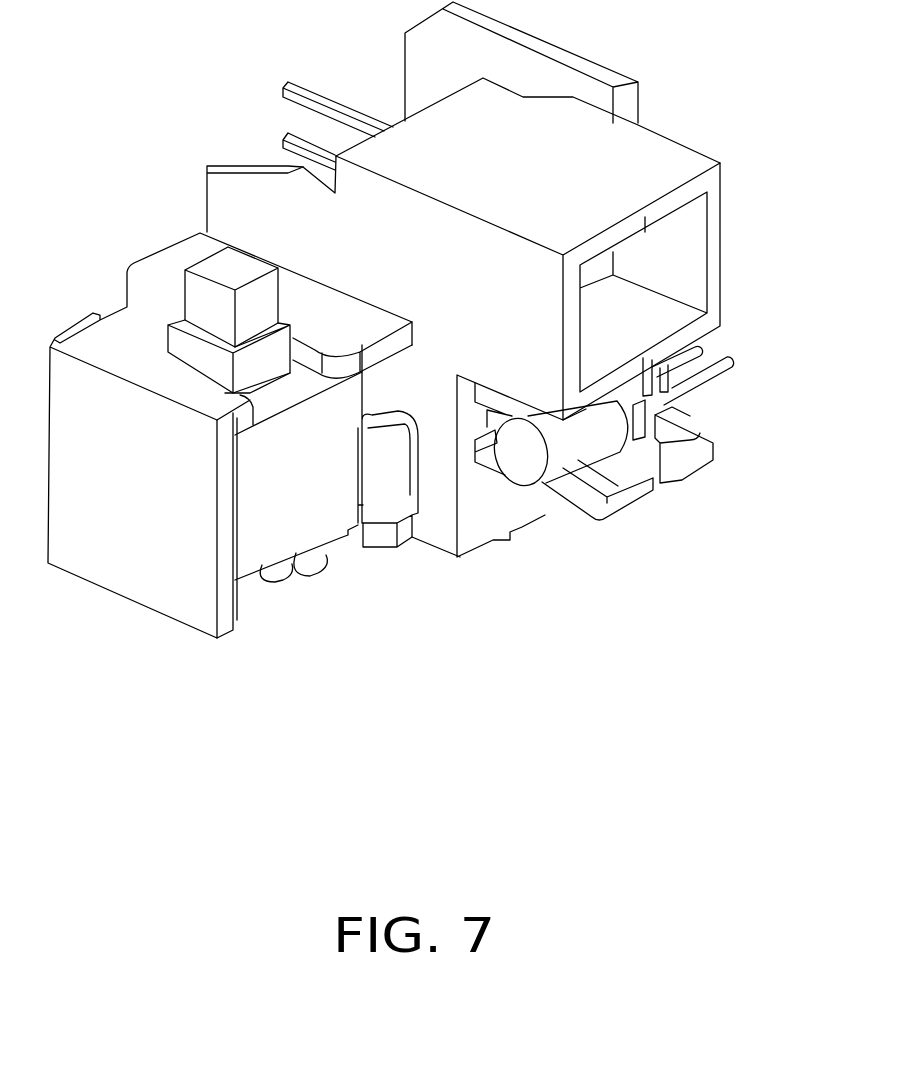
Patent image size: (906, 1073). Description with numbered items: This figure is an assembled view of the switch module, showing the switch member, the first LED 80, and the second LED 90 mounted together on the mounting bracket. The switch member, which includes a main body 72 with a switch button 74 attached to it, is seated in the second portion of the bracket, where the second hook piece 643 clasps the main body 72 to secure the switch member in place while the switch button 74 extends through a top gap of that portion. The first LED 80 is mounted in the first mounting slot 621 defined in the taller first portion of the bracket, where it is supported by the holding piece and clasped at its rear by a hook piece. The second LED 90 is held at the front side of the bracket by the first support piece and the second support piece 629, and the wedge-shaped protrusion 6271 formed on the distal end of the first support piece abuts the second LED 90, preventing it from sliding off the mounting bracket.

The first LED 80 is at (307, 90).
The switch button 74 is at (218, 266).
The first mounting slot 621 is at (683, 237).
The second support piece 629 is at (693, 448).
The wedge-shaped protrusion 6271 is at (610, 473).
The second LED 90 is at (525, 460).
The main body 72 is at (268, 517).
The second hook piece 643 is at (381, 476).